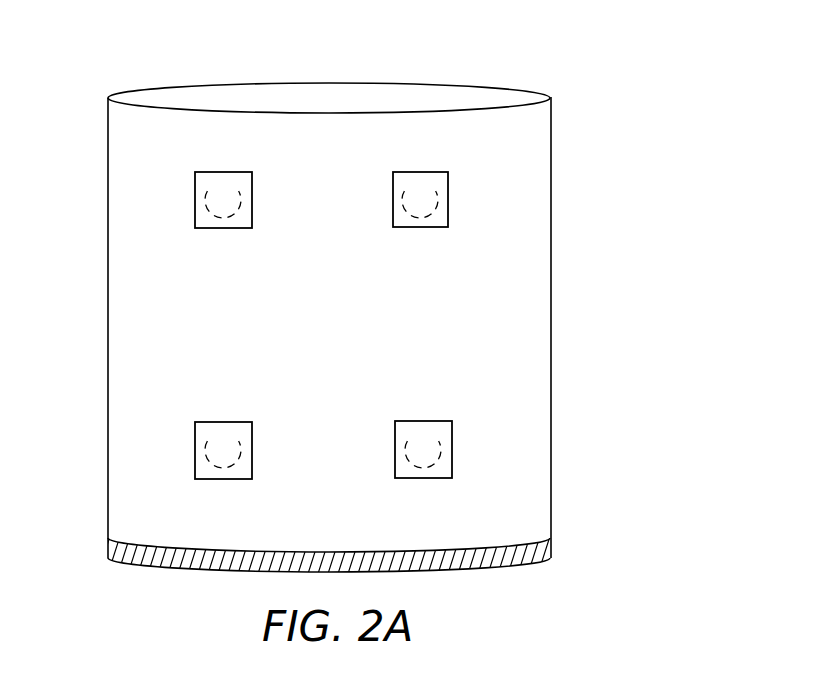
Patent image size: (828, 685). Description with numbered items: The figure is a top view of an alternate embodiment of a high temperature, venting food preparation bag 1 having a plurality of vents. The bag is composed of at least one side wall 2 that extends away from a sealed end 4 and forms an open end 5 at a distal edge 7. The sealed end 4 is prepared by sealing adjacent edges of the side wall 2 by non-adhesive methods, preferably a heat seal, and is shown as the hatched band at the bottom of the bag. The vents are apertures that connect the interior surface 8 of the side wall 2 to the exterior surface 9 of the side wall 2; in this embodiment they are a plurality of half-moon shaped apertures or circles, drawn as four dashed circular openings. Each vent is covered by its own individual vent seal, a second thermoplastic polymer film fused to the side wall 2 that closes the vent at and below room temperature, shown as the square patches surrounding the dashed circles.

The food preparation bag 1 is at (585, 298).
The side wall 2 is at (543, 398).
The sealed end 4 is at (458, 562).
The open end 5 is at (447, 96).
The distal edge 7 is at (258, 83).
The interior surface 8 is at (490, 100).
The exterior surface 9 is at (528, 140).